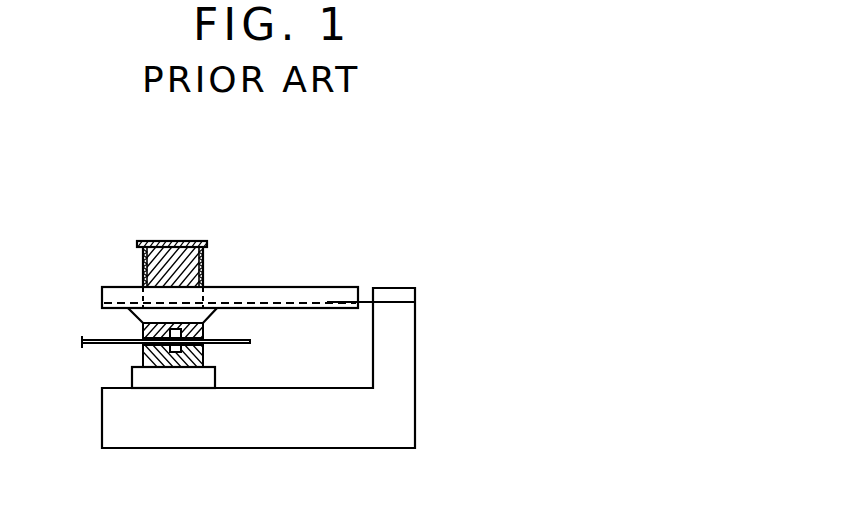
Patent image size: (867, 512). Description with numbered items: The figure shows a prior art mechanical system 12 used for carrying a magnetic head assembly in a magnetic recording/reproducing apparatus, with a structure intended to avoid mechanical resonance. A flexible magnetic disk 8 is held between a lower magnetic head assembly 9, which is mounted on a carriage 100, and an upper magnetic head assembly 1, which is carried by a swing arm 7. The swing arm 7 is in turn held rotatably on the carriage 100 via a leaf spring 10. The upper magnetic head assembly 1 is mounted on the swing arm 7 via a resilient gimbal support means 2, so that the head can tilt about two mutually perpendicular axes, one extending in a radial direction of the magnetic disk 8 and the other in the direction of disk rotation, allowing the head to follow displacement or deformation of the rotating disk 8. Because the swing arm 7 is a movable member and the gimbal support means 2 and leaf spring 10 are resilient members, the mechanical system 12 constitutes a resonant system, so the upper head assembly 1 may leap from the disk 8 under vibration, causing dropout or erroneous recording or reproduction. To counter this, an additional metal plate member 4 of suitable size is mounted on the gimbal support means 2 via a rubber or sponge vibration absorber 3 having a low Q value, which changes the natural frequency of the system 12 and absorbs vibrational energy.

The upper magnetic head assembly 1 is at (142, 332).
The gimbal support means 2 is at (229, 303).
The vibration absorber 3 is at (204, 265).
The metal plate member 4 is at (183, 241).
The swing arm 7 is at (312, 298).
The flexible magnetic disk 8 is at (97, 345).
The lower magnetic head assembly 9 is at (250, 355).
The leaf spring 10 is at (365, 302).
The mechanical system 12 is at (304, 191).
The carriage 100 is at (287, 448).